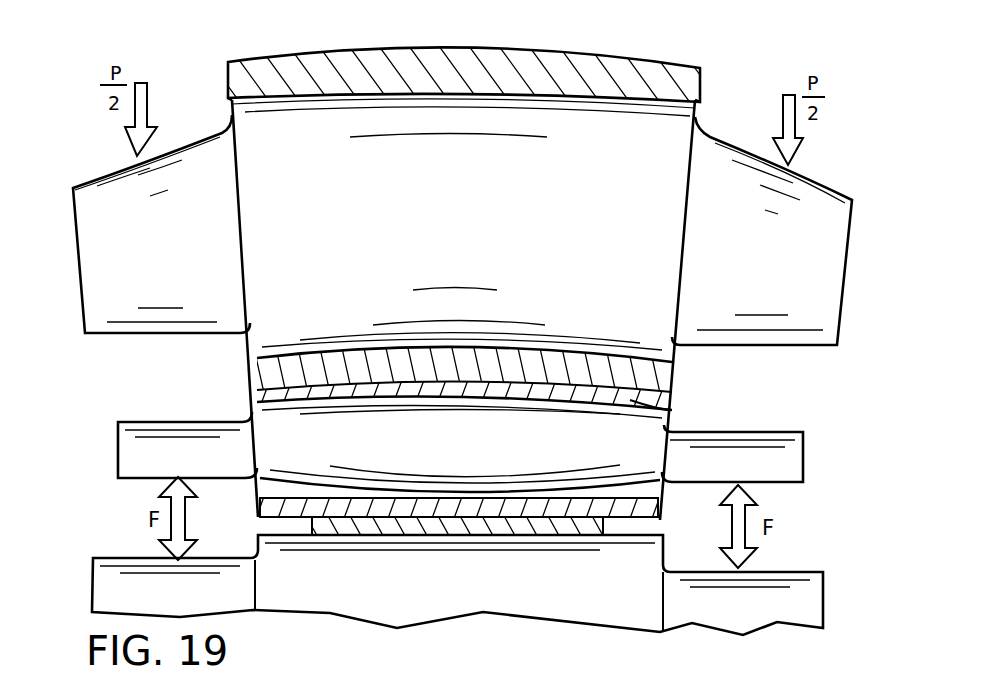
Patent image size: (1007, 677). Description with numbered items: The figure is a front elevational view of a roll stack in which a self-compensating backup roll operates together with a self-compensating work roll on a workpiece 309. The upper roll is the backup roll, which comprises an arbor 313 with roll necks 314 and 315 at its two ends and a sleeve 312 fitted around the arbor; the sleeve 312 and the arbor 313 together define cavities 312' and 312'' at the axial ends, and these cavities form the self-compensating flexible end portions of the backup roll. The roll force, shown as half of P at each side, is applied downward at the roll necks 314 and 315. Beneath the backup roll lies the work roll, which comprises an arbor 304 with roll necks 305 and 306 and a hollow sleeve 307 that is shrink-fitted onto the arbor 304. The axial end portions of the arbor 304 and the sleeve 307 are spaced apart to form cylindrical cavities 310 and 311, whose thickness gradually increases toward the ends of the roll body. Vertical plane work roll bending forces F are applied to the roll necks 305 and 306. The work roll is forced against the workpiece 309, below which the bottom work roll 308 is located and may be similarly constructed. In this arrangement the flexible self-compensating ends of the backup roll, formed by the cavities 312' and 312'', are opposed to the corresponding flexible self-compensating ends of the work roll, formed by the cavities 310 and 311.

The arbor 304 is at (665, 445).
The roll neck 305 is at (137, 470).
The roll neck 306 is at (787, 450).
The hollow sleeve 307 is at (250, 393).
The bottom work roll 308 is at (530, 600).
The workpiece 309 is at (388, 528).
The cylindrical cavity 310 is at (243, 404).
The cylindrical cavity 311 is at (682, 405).
The sleeve 312 is at (445, 75).
The cavity 312' is at (744, 82).
The cavity 312'' is at (192, 71).
The arbor 313 is at (423, 117).
The roll neck 314 is at (118, 195).
The roll neck 315 is at (818, 205).